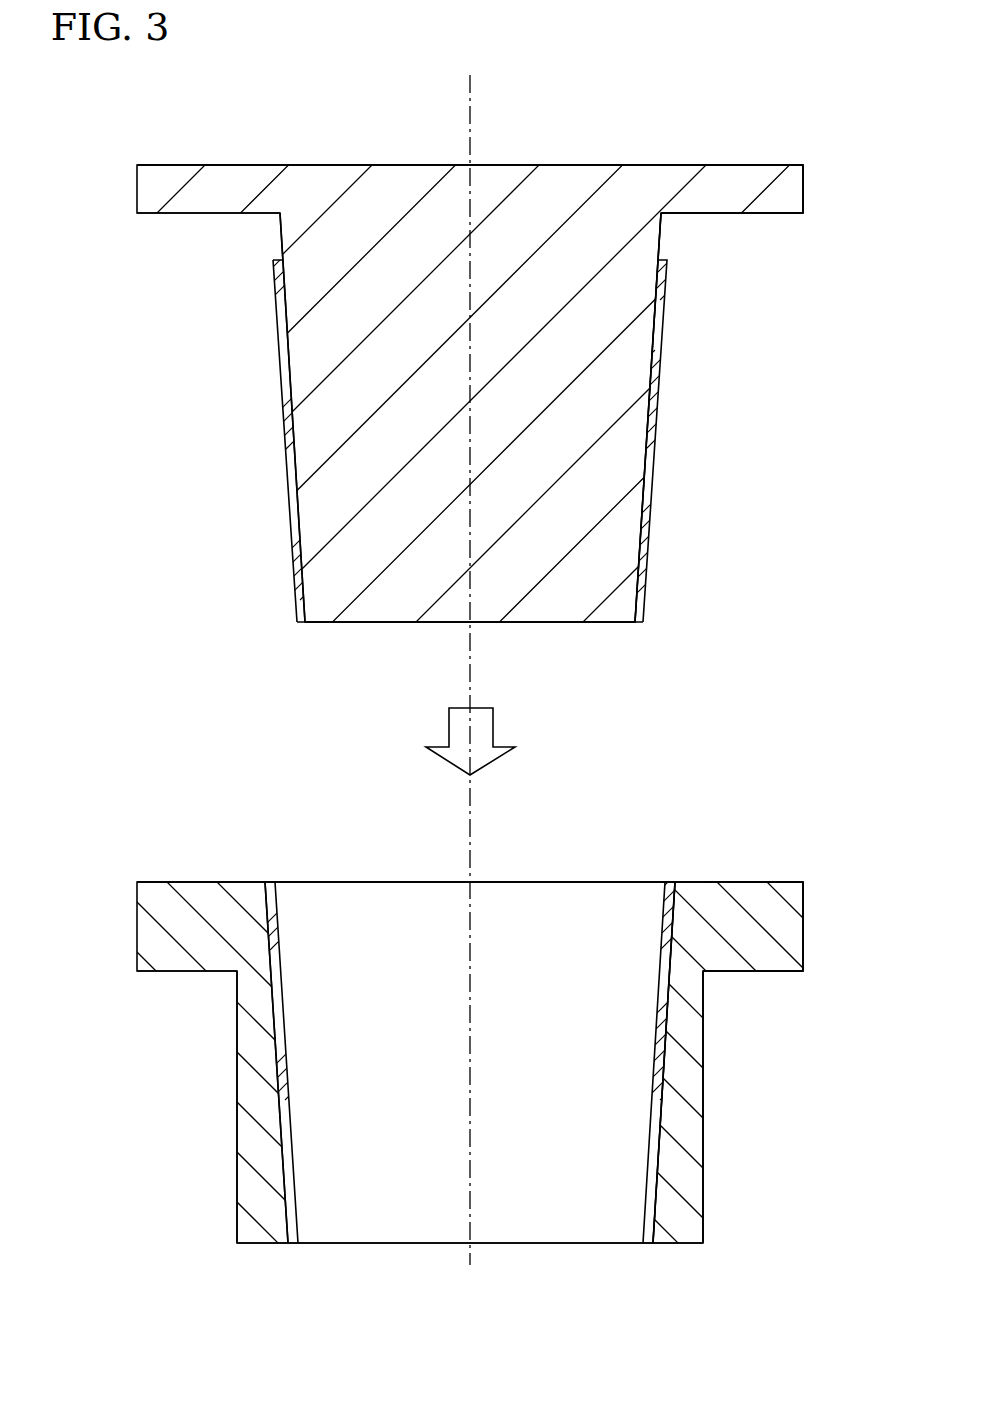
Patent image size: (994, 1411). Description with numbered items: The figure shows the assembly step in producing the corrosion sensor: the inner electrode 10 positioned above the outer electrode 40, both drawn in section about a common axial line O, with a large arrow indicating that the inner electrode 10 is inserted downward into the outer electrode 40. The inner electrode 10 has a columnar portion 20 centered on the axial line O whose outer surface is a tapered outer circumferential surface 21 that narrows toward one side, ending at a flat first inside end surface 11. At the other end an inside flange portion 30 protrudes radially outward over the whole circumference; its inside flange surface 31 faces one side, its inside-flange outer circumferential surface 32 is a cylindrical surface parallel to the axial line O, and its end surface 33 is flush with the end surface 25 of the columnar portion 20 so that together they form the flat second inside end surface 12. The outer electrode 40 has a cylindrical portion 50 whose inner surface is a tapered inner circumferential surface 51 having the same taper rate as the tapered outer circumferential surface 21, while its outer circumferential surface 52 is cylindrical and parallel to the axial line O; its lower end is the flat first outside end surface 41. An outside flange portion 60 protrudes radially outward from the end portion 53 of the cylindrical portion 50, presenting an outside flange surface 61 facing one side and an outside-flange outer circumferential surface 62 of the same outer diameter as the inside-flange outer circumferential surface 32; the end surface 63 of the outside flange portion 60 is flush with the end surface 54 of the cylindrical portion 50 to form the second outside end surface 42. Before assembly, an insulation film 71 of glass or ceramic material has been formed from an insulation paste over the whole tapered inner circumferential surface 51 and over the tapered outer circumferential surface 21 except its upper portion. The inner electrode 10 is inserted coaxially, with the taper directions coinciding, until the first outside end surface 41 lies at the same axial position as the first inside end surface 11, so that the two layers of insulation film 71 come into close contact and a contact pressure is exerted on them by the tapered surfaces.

The axial line O is at (478, 96).
The inner electrode 10 is at (643, 150).
The first inside end surface 11 is at (555, 622).
The second inside end surface 12 is at (578, 150).
The columnar portion 20 is at (590, 380).
The tapered outer circumferential surface 21 is at (645, 450).
The end surface of the columnar portion 25 is at (505, 165).
The inside flange portion 30 is at (743, 187).
The inside flange surface 31 is at (740, 213).
The inside-flange outer circumferential surface 32 is at (803, 183).
The end surface of the inside flange portion 33 is at (705, 165).
The outer electrode 40 is at (727, 1130).
The first outside end surface 41 is at (672, 1243).
The second outside end surface 42 is at (738, 865).
The cylindrical portion 50 is at (683, 1097).
The tapered inner circumferential surface 51 is at (661, 1065).
The outer circumferential surface 52 is at (705, 1182).
The end portion of the cylindrical portion 53 is at (688, 925).
The end surface of the cylindrical portion 54 is at (688, 880).
The outside flange portion 60 is at (775, 920).
The outside flange surface 61 is at (752, 971).
The outside-flange outer circumferential surface 62 is at (803, 945).
The end surface of the outside flange portion 63 is at (790, 880).
The insulation film 71 is at (652, 512).